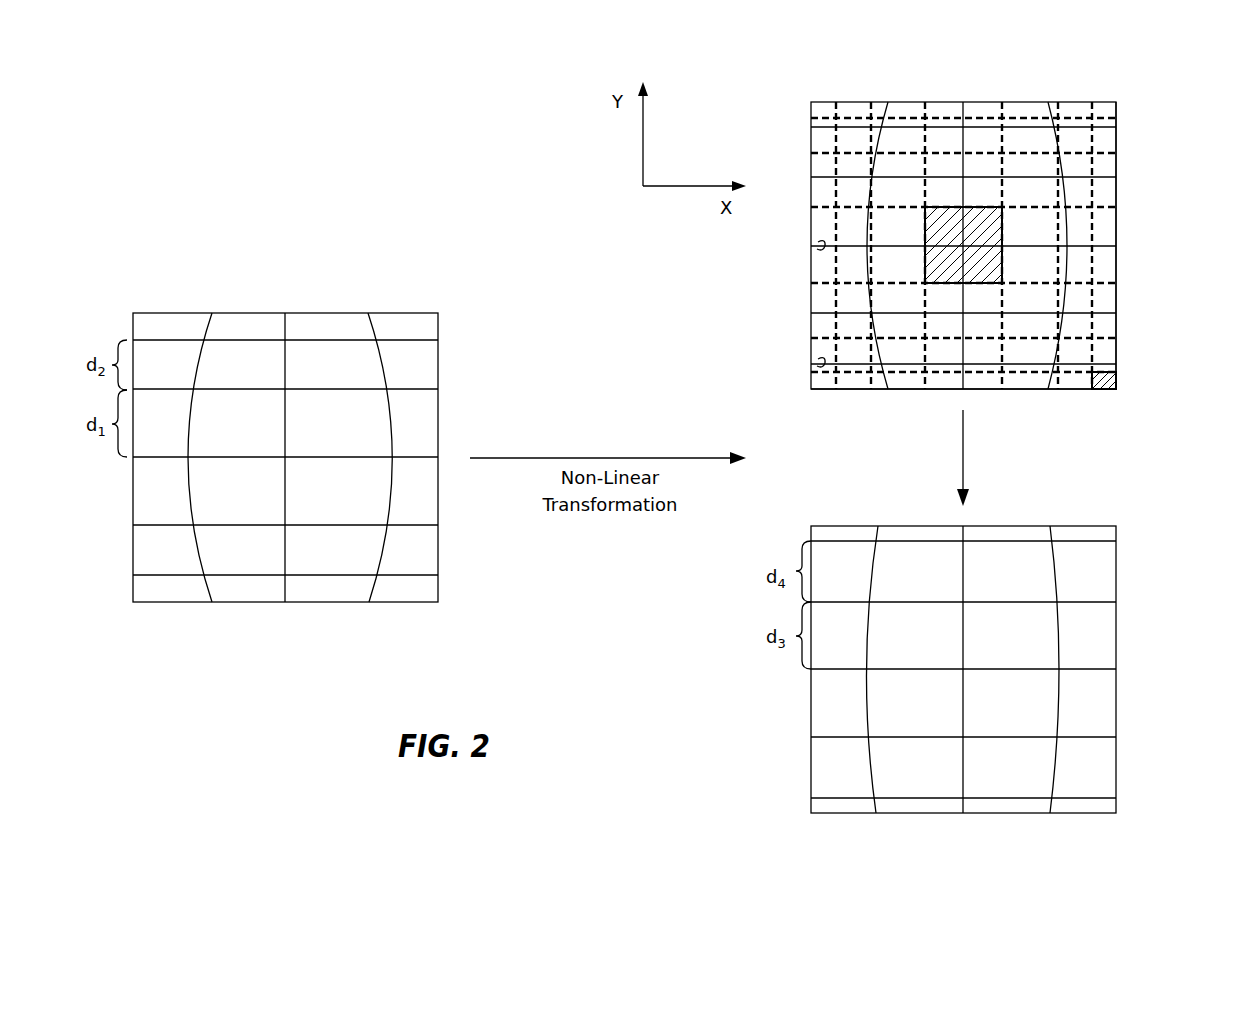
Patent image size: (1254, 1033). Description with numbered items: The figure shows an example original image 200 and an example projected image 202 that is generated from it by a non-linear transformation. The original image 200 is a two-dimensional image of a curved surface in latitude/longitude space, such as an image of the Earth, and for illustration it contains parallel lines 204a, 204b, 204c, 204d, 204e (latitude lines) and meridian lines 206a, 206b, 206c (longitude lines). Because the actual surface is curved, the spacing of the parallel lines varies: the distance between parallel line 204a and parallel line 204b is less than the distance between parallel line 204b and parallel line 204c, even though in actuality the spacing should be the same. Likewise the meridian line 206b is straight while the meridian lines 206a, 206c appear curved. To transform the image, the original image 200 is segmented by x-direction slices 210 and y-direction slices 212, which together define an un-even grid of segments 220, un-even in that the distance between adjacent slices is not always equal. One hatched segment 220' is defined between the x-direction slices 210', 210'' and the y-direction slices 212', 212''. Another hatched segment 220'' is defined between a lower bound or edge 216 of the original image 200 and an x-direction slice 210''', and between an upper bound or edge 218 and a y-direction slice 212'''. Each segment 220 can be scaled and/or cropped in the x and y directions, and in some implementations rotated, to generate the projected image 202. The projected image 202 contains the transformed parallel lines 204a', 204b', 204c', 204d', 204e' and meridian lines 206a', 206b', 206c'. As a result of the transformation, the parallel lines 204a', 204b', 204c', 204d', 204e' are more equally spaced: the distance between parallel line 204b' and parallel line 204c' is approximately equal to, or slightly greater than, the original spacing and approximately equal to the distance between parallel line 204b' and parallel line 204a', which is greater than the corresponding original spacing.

The original image 200 is at (687, 328).
The projected image 202 is at (1018, 662).
The parallel line 204a is at (331, 353).
The parallel line 204b is at (329, 403).
The parallel line 204c is at (319, 470).
The parallel line 204d is at (331, 539).
The parallel line 204e is at (331, 589).
The parallel line 204a' is at (1009, 555).
The parallel line 204b' is at (1009, 614).
The parallel line 204c' is at (1009, 681).
The parallel line 204d' is at (1009, 749).
The parallel line 204e' is at (1009, 809).
The meridian line 206a is at (235, 434).
The meridian line 206b is at (322, 434).
The meridian line 206c is at (408, 434).
The meridian line 206a' is at (920, 687).
The meridian line 206b' is at (1013, 687).
The meridian line 206c' is at (1091, 645).
The x-direction slice 210 is at (994, 130).
The x-direction slice 210' is at (1000, 256).
The x-direction slice 210'' is at (1002, 185).
The x-direction slice 210''' is at (1006, 339).
The y-direction slice 212 is at (869, 221).
The y-direction slice 212' is at (960, 221).
The y-direction slice 212'' is at (1039, 221).
The y-direction slice 212''' is at (1048, 261).
The lower bound or edge 216 is at (860, 389).
The upper bound or edge 218 is at (1116, 300).
The segment 220 is at (787, 326).
The segment 220' is at (963, 245).
The segment 220'' is at (1146, 392).